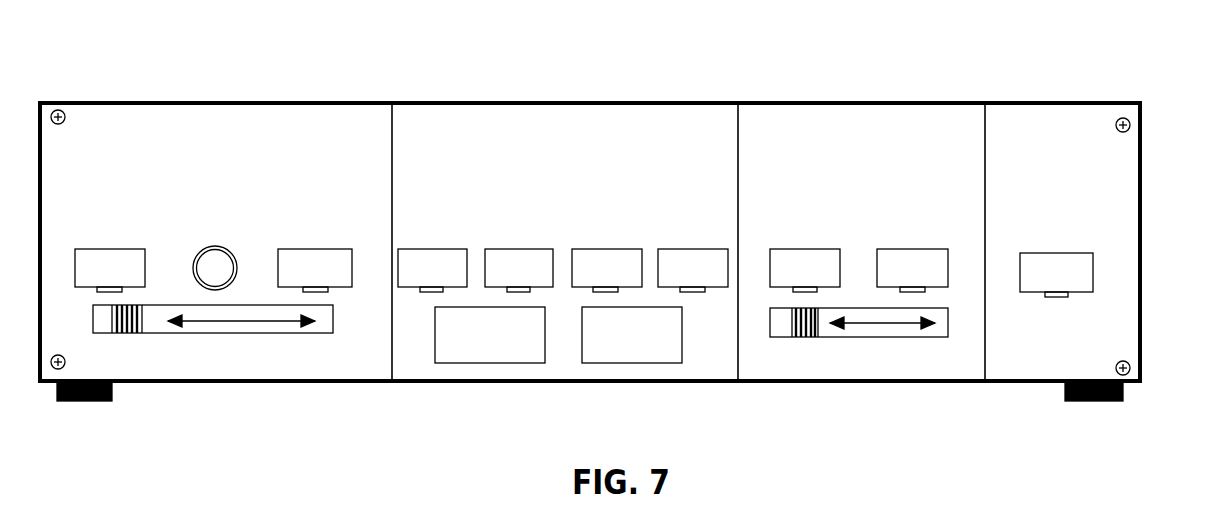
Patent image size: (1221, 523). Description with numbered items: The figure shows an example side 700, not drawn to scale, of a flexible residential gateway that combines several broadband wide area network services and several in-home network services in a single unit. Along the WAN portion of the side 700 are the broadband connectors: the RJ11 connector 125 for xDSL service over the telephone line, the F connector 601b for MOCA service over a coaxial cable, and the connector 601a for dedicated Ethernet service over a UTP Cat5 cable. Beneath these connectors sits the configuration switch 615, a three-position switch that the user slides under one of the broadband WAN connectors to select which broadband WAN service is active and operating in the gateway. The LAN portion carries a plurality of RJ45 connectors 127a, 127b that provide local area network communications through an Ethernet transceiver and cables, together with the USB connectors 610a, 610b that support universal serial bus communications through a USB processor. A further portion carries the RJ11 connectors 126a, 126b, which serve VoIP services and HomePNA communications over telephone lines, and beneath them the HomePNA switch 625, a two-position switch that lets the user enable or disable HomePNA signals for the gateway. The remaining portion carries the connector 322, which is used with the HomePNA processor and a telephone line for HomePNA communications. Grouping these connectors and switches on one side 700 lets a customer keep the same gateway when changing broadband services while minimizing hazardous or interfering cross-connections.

The side 700 is at (619, 223).
The RJ11 connector 125 is at (122, 254).
The F connector 601b is at (262, 217).
The connector 601a is at (352, 218).
The configuration switch 615 is at (213, 370).
The RJ45 connector 127a is at (456, 253).
The RJ45 connector 127b is at (673, 253).
The USB connector 610a is at (459, 376).
The USB connector 610b is at (583, 376).
The RJ11 connector 126a is at (823, 245).
The RJ11 connector 126b is at (887, 233).
The HomePNA switch 625 is at (829, 373).
The connector 322 is at (1045, 250).